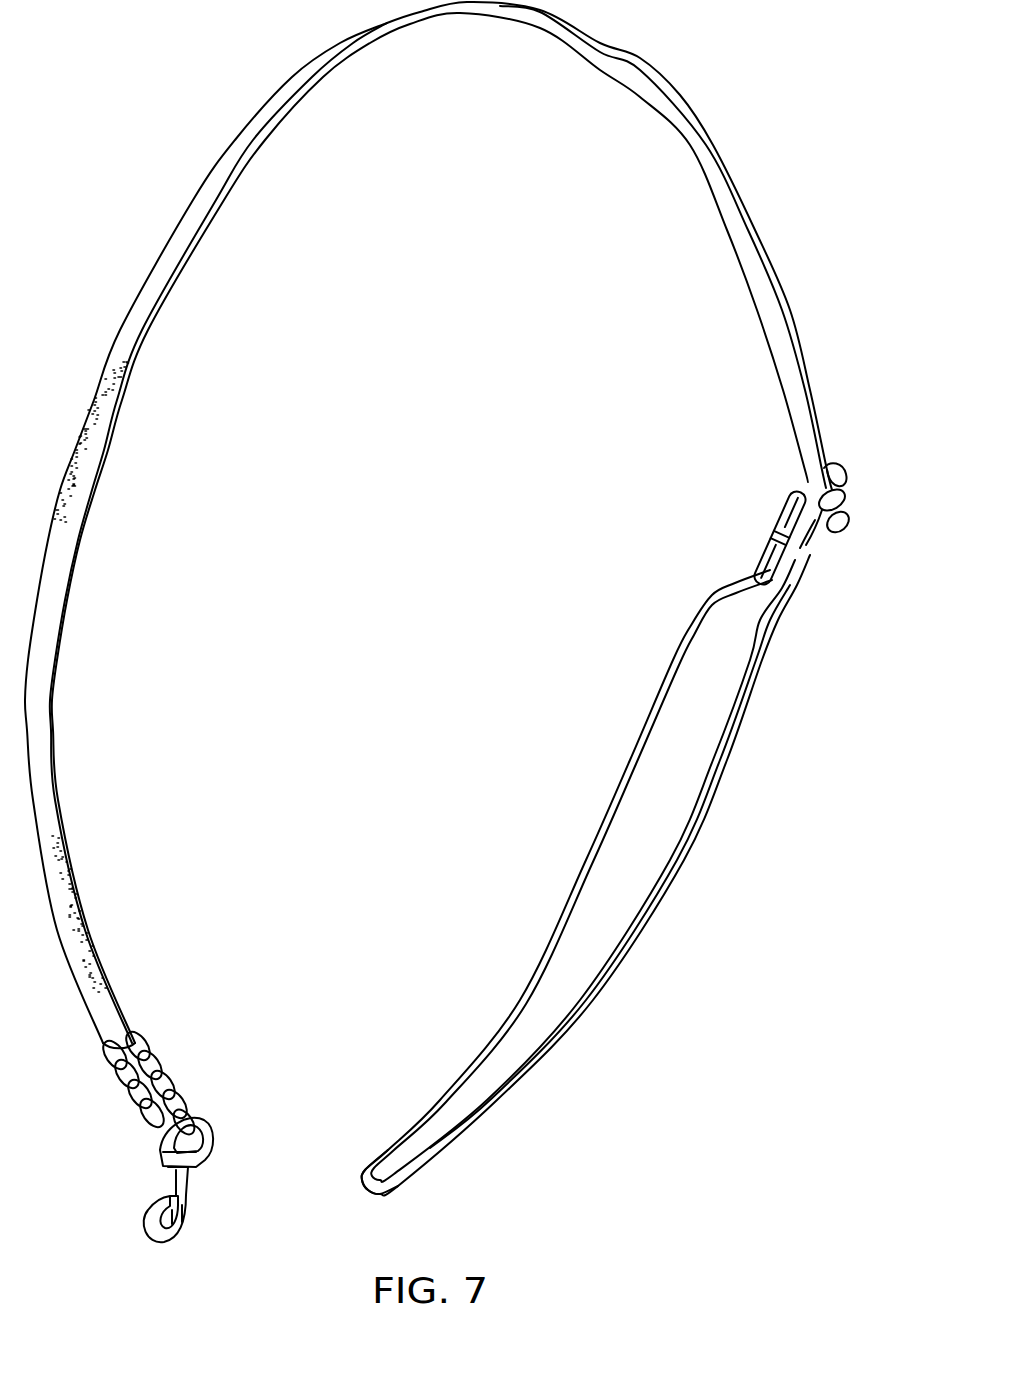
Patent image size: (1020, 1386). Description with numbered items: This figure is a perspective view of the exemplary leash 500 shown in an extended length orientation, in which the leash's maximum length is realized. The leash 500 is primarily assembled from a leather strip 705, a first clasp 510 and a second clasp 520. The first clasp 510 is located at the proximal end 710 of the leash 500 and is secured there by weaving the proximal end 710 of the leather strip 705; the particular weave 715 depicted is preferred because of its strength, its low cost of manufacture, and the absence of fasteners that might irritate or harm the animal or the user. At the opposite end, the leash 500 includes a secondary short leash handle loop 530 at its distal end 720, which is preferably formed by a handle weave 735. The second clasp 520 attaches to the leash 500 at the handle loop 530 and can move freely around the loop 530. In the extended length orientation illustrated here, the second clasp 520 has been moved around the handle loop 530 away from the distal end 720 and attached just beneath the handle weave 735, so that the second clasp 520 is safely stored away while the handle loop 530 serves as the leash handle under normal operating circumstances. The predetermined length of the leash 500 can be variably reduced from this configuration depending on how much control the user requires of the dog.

The leash 500 is at (474, 635).
The leather strip 705 is at (140, 318).
The weave 715 is at (122, 1100).
The proximal end 710 is at (212, 1180).
The first clasp 510 is at (142, 1224).
The second clasp 520 is at (790, 512).
The handle weave 735 is at (848, 526).
The handle loop 530 is at (672, 797).
The distal end 720 is at (357, 1204).